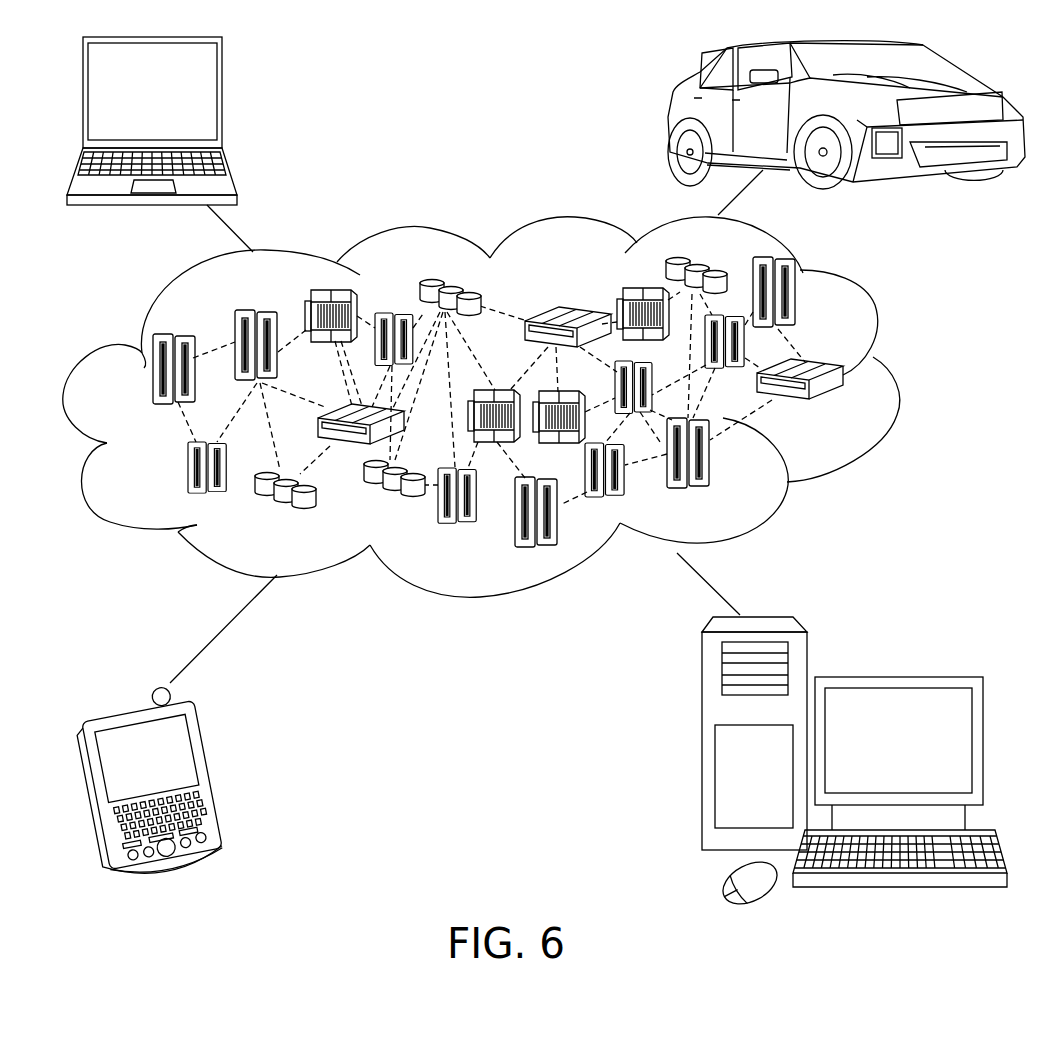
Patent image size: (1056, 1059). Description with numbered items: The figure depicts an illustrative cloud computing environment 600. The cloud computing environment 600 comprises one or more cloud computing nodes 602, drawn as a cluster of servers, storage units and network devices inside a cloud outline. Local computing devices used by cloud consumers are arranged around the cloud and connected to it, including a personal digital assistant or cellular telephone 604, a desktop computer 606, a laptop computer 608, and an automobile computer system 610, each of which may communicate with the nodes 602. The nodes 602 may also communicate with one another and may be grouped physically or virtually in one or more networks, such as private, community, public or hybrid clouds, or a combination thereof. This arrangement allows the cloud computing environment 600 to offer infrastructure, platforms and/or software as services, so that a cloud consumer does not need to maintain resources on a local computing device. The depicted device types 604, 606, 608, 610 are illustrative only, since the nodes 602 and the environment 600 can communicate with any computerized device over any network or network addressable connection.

The cloud computing environment 600 is at (897, 382).
The cloud computing nodes 602 is at (845, 412).
The personal digital assistant (PDA) or cellular telephone 604 is at (212, 770).
The desktop computer 606 is at (895, 677).
The laptop computer 608 is at (222, 100).
The automobile computer system 610 is at (672, 117).